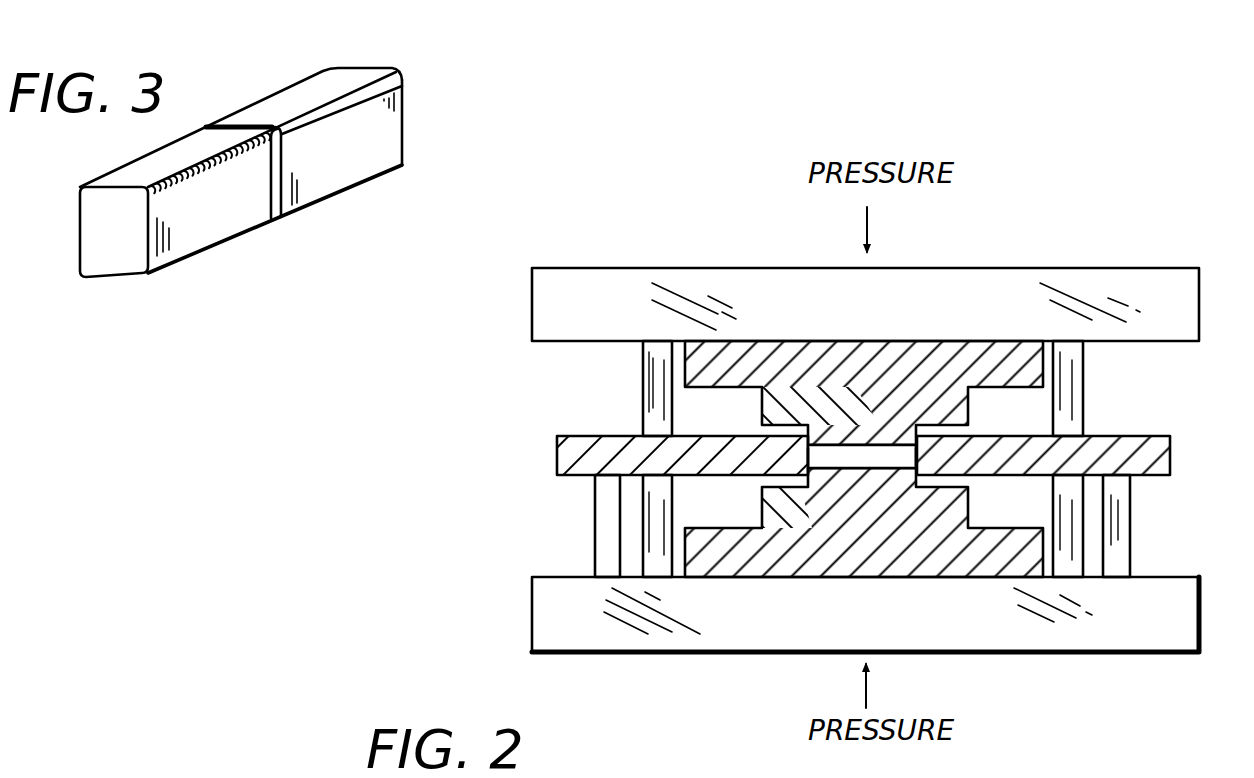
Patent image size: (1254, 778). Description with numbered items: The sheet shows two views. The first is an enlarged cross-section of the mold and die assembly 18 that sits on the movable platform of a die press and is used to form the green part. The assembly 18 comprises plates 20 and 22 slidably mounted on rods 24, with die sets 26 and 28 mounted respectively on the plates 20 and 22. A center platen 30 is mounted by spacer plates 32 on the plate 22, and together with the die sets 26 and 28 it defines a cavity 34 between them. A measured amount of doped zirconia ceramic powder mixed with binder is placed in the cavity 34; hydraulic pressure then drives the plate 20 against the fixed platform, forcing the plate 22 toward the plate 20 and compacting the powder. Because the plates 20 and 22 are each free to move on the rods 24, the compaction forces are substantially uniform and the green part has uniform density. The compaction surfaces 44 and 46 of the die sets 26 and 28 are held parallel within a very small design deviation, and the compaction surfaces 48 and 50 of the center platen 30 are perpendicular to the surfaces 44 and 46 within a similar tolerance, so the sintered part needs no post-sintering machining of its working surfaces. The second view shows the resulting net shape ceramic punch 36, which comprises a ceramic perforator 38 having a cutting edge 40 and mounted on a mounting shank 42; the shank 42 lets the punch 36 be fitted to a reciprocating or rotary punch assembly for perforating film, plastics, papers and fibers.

In FIG. 2, the mold and die assembly 18 is at (994, 242).
In FIG. 2, the plate 20 is at (752, 268).
In FIG. 2, the plate 22 is at (532, 622).
In FIG. 2, the rods 24 is at (643, 380).
In FIG. 2, the die set 26 is at (968, 408).
In FIG. 2, the die set 28 is at (978, 520).
In FIG. 2, the center platen 30 is at (557, 440).
In FIG. 2, the spacer plates 32 is at (595, 520).
In FIG. 2, the cavity 34 is at (824, 469).
In FIG. 3, the ceramic punch 36 is at (284, 199).
In FIG. 3, the ceramic perforator 38 is at (237, 232).
In FIG. 3, the cutting edge 40 is at (122, 253).
In FIG. 3, the mounting shank 42 is at (403, 130).
In FIG. 2, the compaction surface 44 is at (880, 447).
In FIG. 2, the compaction surface 46 is at (882, 467).
In FIG. 2, the compaction surface 48 is at (812, 457).
In FIG. 2, the compaction surface 50 is at (915, 456).